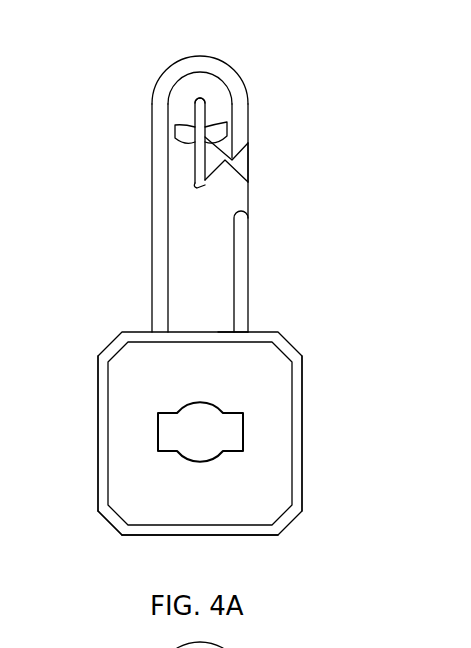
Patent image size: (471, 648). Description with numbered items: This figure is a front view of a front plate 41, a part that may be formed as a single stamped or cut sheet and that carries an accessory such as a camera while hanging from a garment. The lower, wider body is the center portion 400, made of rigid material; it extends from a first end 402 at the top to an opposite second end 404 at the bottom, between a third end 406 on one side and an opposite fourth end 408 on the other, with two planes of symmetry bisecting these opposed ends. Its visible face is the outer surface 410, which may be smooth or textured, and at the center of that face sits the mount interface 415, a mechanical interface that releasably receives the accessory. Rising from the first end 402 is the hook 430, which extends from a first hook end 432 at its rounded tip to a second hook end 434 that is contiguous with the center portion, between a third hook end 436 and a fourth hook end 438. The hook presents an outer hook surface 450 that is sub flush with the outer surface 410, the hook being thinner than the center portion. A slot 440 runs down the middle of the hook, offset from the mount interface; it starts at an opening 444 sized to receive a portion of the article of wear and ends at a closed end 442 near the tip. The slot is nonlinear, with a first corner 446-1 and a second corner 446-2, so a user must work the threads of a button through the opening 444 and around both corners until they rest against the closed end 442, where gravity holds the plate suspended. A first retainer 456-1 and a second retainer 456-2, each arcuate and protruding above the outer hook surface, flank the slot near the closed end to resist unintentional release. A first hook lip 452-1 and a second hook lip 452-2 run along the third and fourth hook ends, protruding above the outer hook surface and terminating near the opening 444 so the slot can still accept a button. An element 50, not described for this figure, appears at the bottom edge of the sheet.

The front plate 41 is at (405, 74).
The center portion 400 is at (107, 524).
The first end 402 is at (207, 437).
The second end 404 is at (263, 536).
The third end 406 is at (98, 376).
The fourth end 408 is at (302, 477).
The outer surface 410 is at (221, 378).
The mount interface 415 is at (236, 424).
The hook 430 is at (242, 168).
The first hook end 432 is at (208, 56).
The second hook end 434 is at (218, 331).
The third hook end 436 is at (152, 175).
The fourth hook end 438 is at (248, 290).
The slot 440 is at (271, 119).
The closed end 442 is at (201, 94).
The opening 444 is at (259, 167).
The first corner 446-1 is at (230, 142).
The second corner 446-2 is at (193, 186).
The outer hook surface 450 is at (220, 246).
The first hook lip 452-1 is at (120, 218).
The second hook lip 452-2 is at (321, 218).
The first retainer 456-1 is at (183, 121).
The second retainer 456-2 is at (227, 119).
The adjacent figure element 50 is at (385, 647).